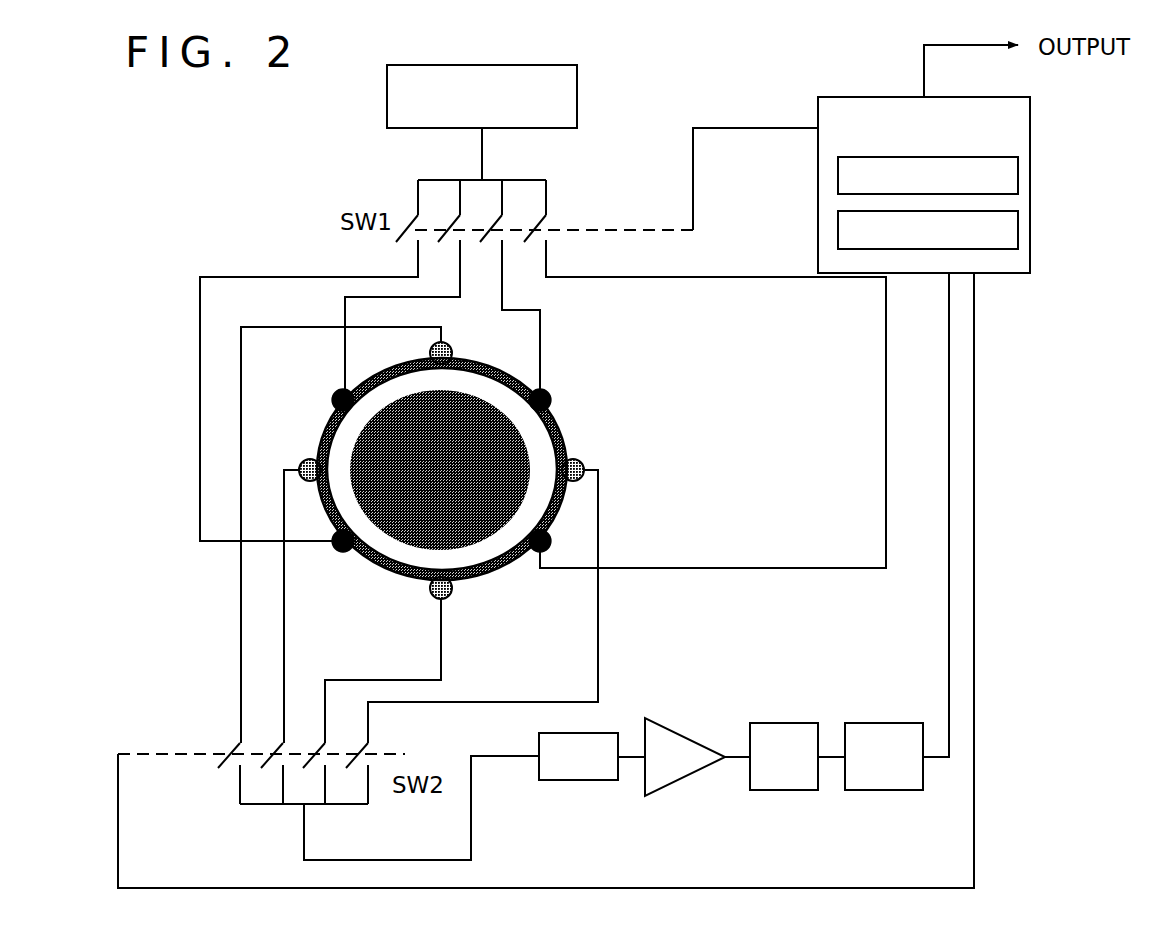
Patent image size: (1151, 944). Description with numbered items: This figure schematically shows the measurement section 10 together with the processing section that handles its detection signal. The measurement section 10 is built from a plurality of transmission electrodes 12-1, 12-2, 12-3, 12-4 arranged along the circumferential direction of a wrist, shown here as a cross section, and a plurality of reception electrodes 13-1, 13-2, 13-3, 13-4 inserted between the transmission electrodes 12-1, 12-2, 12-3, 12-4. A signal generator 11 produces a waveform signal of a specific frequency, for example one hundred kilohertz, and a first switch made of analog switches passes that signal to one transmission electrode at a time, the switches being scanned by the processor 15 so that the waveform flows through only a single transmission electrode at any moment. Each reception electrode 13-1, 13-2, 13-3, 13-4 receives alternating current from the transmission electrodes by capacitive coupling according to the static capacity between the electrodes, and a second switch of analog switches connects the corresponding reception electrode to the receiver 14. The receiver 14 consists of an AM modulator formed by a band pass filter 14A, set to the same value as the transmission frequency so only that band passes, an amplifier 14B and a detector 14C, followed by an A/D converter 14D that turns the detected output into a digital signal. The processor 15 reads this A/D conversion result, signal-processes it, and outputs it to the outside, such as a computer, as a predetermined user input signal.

The measurement section 10 is at (165, 118).
The signal generator 11 is at (577, 96).
The transmission electrode 12-1 is at (552, 388).
The transmission electrode 12-2 is at (332, 388).
The transmission electrode 12-3 is at (343, 556).
The transmission electrode 12-4 is at (530, 560).
The reception electrode 13-1 is at (590, 462).
The reception electrode 13-2 is at (448, 345).
The reception electrode 13-3 is at (300, 456).
The reception electrode 13-4 is at (436, 602).
The receiver 14 is at (738, 557).
The band pass filter 14A is at (578, 756).
The amplifier 14B is at (685, 757).
The detector 14C is at (784, 756).
The A/D converter 14D is at (884, 756).
The processor 15 is at (1030, 182).